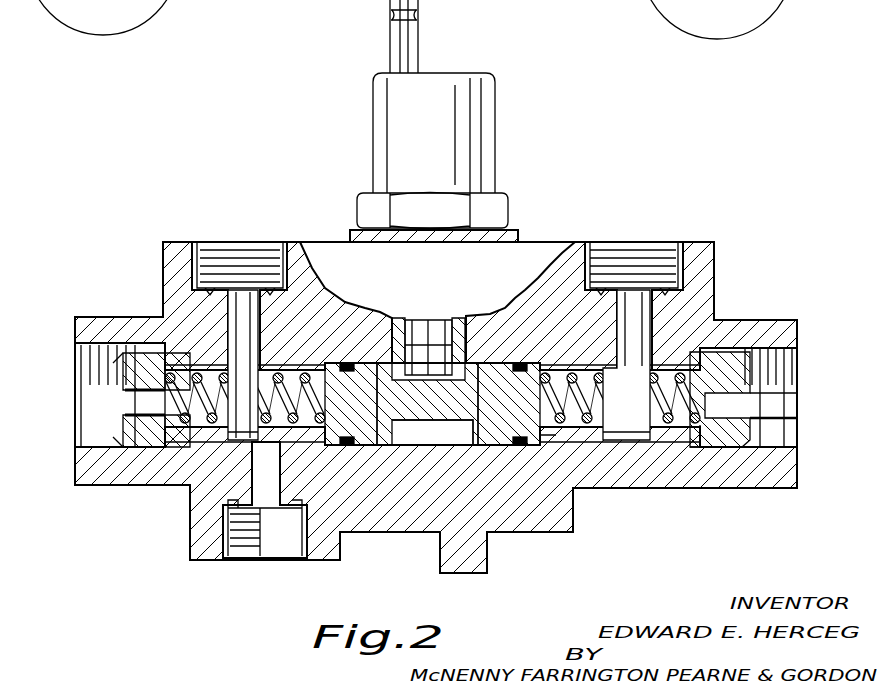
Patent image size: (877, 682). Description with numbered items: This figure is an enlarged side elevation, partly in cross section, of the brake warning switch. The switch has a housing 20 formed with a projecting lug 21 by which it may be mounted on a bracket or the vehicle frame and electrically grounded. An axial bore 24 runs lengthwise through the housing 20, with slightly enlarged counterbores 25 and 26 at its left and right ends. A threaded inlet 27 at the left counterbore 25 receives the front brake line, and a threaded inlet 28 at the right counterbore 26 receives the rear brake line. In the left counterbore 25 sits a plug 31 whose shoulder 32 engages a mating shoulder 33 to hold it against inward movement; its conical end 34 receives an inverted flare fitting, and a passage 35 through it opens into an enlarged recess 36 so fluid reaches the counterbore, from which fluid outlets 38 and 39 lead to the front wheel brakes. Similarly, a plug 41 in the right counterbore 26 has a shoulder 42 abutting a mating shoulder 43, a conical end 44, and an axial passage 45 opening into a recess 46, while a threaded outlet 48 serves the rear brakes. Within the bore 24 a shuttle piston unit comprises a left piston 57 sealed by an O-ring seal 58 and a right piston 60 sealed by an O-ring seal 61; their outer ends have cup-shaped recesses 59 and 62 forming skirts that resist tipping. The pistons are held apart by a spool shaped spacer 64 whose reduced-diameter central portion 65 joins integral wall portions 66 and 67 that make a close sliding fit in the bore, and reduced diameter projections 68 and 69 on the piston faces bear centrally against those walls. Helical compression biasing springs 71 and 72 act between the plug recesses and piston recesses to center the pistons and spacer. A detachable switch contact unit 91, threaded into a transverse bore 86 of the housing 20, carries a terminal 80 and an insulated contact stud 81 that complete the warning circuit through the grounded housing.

The housing 20 is at (705, 243).
The projecting lug 21 is at (487, 558).
The axial bore 24 is at (448, 445).
The left counterbore 25 is at (258, 365).
The right counterbore 26 is at (640, 441).
The threaded inlet 27 is at (92, 350).
The threaded inlet 28 is at (786, 455).
The plug 31 is at (155, 450).
The shoulder 32 is at (190, 358).
The mating shoulder 33 is at (168, 460).
The conical end 34 is at (125, 440).
The passage 35 is at (110, 395).
The enlarged recess 36 is at (200, 443).
The fluid outlet 38 is at (214, 255).
The fluid outlet 39 is at (295, 550).
The plug 41 is at (735, 345).
The shoulder 42 is at (700, 360).
The mating shoulder 43 is at (700, 465).
The conical end 44 is at (752, 437).
The axial passage 45 is at (752, 402).
The recess 46 is at (720, 448).
The threaded outlet 48 is at (594, 258).
The left piston 57 is at (328, 445).
The O-ring seal 58 is at (347, 363).
The cup-shaped recess 59 is at (286, 447).
The right piston 60 is at (543, 446).
The O-ring seal 61 is at (520, 364).
The cup-shaped recess 62 is at (585, 446).
The spool shaped spacer 64 is at (425, 448).
The central axially extending portion 65 is at (427, 404).
The wall portion 66 is at (352, 445).
The wall portion 67 is at (518, 447).
The reduced diameter projection 68 is at (351, 404).
The reduced diameter projection 69 is at (509, 404).
The helical compression biasing spring 71 is at (303, 370).
The helical compression biasing spring 72 is at (570, 370).
The terminal 80 is at (418, 44).
The contact stud 81 is at (465, 352).
The threaded transverse bore 86 is at (405, 322).
The detachable switch contact unit 91 is at (504, 134).